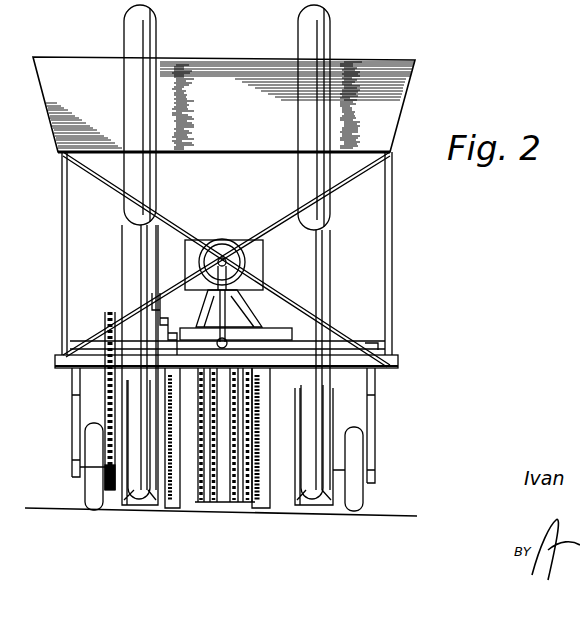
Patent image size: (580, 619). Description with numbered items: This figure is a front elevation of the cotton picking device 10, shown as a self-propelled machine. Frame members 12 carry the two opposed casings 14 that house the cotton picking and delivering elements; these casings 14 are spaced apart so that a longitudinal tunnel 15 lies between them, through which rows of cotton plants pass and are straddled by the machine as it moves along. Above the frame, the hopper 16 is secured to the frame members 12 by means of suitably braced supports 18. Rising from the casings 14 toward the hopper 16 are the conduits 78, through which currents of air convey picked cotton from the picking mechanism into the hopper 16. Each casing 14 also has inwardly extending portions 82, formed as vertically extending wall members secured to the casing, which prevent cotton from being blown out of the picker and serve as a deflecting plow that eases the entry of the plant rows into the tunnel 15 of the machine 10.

The cotton picking device 10 is at (403, 328).
The frame members 12 is at (400, 366).
The casings 14 is at (152, 508).
The longitudinal tunnel 15 is at (228, 490).
The hopper 16 is at (405, 106).
The braced supports 18 is at (393, 248).
The conduits 78 is at (158, 35).
The inwardly extending portions 82 is at (188, 505).